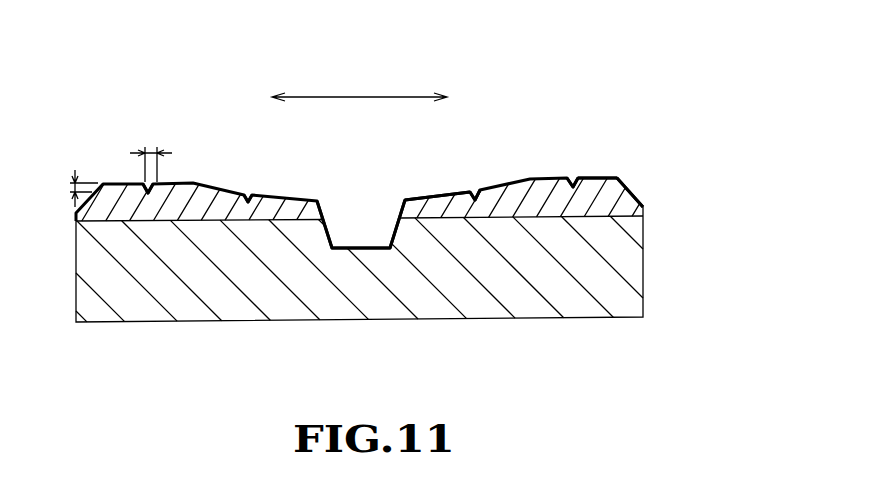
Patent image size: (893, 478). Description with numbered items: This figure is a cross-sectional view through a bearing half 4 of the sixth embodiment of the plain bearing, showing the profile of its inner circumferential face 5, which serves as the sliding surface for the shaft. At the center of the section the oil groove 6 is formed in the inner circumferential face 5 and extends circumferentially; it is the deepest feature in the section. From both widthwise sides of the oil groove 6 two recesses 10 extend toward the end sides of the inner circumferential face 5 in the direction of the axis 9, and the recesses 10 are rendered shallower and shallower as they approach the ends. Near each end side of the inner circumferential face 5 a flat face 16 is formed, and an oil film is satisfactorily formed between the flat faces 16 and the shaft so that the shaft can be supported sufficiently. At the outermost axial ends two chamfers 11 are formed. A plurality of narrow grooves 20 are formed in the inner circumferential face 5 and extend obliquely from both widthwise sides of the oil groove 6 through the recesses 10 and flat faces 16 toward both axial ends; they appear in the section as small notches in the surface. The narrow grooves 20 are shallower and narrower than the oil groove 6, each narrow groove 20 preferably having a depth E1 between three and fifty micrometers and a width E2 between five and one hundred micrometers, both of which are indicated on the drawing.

The bearing half 4 is at (540, 317).
The inner circumferential face 5 is at (435, 178).
The oil groove 6 is at (393, 220).
The axis 9 is at (360, 97).
The recess 10 is at (460, 188).
The chamfer 11 is at (630, 193).
The flat face 16 is at (605, 177).
The narrow groove 20 is at (250, 194).
The depth of narrow groove E1 is at (64, 188).
The width of narrow groove E2 is at (151, 150).